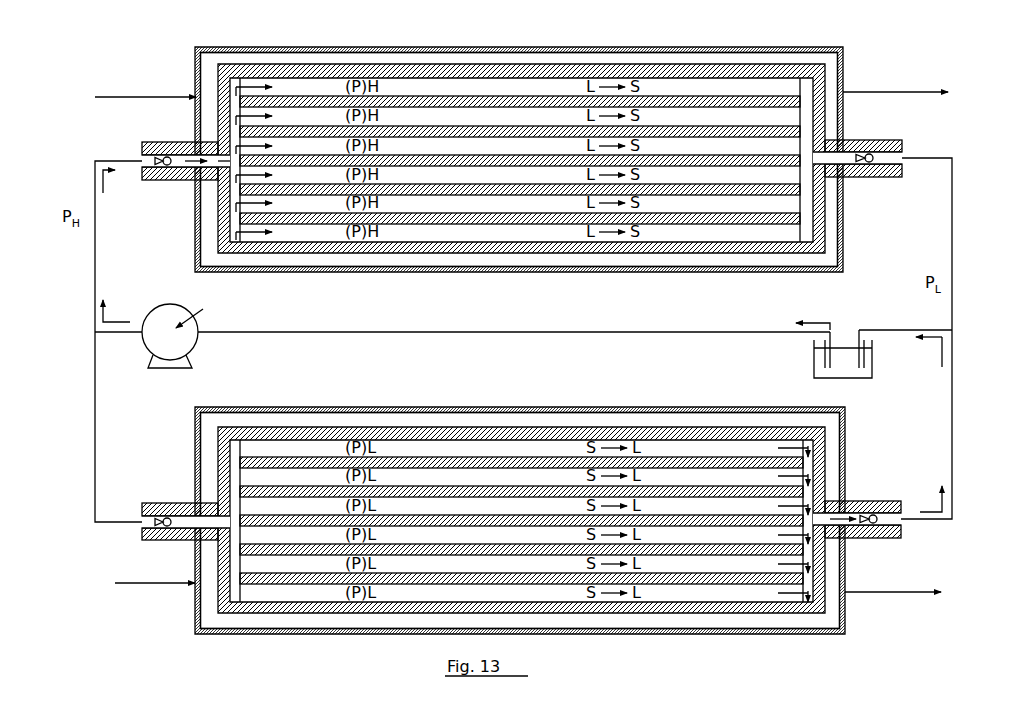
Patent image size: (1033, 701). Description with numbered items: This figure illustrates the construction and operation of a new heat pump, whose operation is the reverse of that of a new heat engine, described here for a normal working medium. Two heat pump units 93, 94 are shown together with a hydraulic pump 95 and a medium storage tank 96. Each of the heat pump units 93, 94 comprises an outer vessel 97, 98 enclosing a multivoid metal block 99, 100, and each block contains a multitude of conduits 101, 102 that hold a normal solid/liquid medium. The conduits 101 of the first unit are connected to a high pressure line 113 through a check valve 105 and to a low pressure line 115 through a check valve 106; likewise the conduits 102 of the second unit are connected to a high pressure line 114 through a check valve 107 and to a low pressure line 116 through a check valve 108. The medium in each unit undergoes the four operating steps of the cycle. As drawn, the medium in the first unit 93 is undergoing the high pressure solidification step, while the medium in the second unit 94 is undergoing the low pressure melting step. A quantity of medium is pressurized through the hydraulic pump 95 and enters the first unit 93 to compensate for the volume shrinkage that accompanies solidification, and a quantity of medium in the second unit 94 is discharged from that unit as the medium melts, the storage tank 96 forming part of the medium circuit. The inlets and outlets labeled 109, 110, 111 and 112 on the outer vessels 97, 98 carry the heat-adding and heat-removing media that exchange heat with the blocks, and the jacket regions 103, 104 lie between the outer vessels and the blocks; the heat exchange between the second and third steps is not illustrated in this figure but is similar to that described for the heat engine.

The heat pump unit 93 is at (362, 48).
The heat pump unit 94 is at (344, 410).
The hydraulic pump 95 is at (170, 312).
The medium storage tank 96 is at (838, 345).
The outer vessel 97 is at (478, 49).
The outer vessel 98 is at (457, 411).
The multivoid metal block 99 is at (617, 72).
The multivoid metal block 100 is at (572, 432).
The conduits 101 is at (697, 117).
The conduits 102 is at (693, 480).
The annular jacket space of first vessel 103 is at (276, 60).
The annular jacket space of second vessel 104 is at (282, 422).
The check valve 105 is at (166, 166).
The check valve 106 is at (869, 163).
The check valve 107 is at (166, 517).
The check valve 108 is at (872, 508).
The heat-adding medium inlet 109 is at (195, 96).
The heat-adding medium outlet 110 is at (843, 93).
The heat-removing medium inlet 111 is at (195, 585).
The heat-removing medium outlet 112 is at (847, 594).
The high pressure line 113 is at (95, 268).
The high pressure line 114 is at (95, 423).
The low pressure line 115 is at (952, 236).
The low pressure line 116 is at (952, 422).